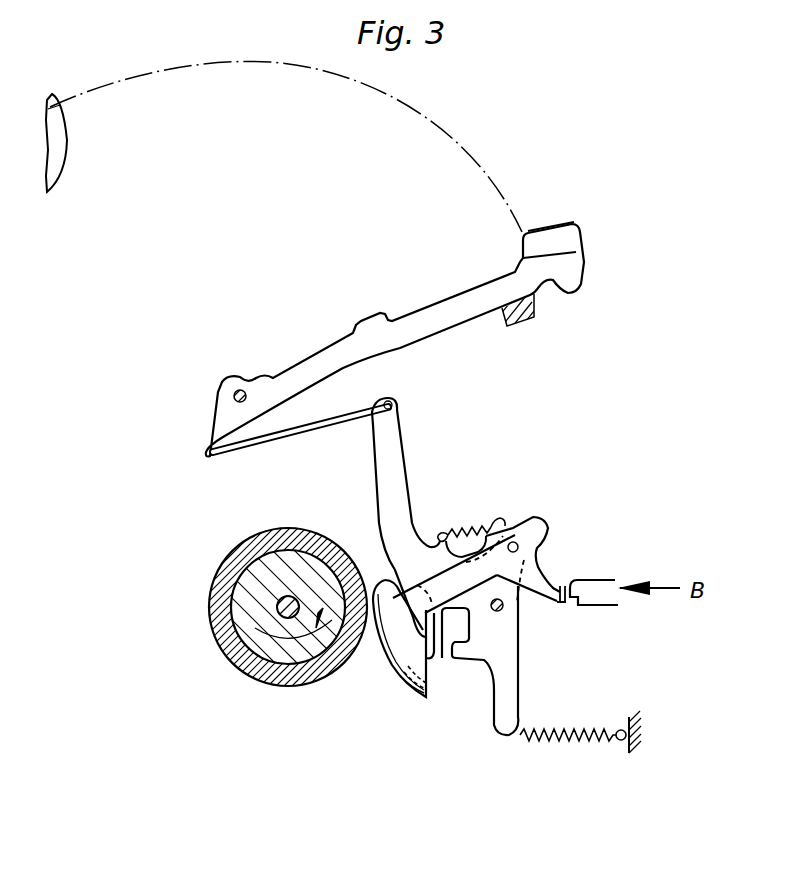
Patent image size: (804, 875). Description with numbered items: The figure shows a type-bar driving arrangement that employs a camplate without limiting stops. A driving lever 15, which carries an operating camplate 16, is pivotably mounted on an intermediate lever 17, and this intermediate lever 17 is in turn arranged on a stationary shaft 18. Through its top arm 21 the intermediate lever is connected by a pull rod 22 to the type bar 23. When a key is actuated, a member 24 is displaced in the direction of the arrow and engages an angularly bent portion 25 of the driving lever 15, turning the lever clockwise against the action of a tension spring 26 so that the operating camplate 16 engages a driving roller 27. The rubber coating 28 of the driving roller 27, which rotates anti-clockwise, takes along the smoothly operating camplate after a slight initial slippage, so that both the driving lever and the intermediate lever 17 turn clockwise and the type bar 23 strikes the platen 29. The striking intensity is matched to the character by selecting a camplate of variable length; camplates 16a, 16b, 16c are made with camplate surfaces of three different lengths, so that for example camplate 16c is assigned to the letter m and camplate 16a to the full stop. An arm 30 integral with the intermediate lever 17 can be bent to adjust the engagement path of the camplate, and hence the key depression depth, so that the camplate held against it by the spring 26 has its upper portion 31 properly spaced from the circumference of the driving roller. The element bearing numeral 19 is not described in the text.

The driving lever 15 is at (500, 556).
The operating camplate 16 is at (402, 651).
The operating camplate 16a is at (417, 694).
The operating camplate 16b is at (424, 700).
The operating camplate 16c is at (429, 698).
The intermediate lever 17 is at (499, 640).
The stationary shaft 18 is at (503, 607).
The return spring 19 is at (606, 740).
The top arm 21 is at (395, 455).
The pull rod 22 is at (296, 437).
The type bar 23 is at (445, 322).
The member 24 is at (598, 592).
The angularly bent portion 25 is at (566, 583).
The tension spring 26 is at (468, 529).
The driving roller 27 is at (248, 625).
The rubber coating 28 is at (280, 688).
The platen 29 is at (61, 151).
The arm 30 is at (443, 650).
The upper portion 31 is at (376, 583).